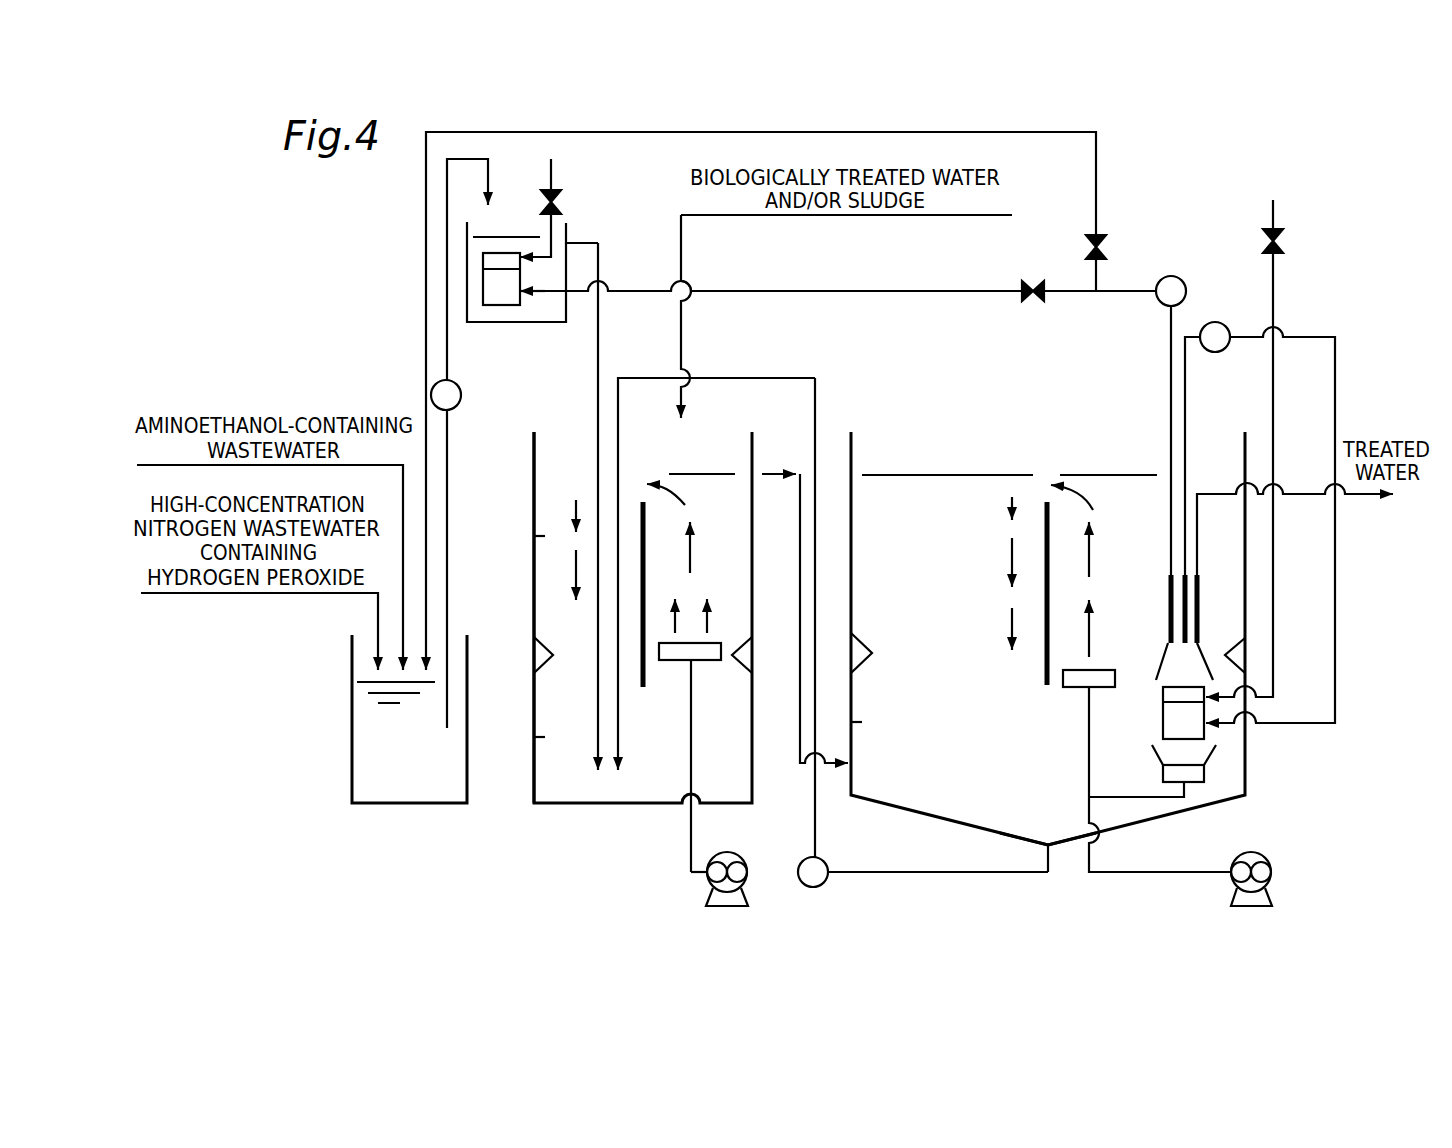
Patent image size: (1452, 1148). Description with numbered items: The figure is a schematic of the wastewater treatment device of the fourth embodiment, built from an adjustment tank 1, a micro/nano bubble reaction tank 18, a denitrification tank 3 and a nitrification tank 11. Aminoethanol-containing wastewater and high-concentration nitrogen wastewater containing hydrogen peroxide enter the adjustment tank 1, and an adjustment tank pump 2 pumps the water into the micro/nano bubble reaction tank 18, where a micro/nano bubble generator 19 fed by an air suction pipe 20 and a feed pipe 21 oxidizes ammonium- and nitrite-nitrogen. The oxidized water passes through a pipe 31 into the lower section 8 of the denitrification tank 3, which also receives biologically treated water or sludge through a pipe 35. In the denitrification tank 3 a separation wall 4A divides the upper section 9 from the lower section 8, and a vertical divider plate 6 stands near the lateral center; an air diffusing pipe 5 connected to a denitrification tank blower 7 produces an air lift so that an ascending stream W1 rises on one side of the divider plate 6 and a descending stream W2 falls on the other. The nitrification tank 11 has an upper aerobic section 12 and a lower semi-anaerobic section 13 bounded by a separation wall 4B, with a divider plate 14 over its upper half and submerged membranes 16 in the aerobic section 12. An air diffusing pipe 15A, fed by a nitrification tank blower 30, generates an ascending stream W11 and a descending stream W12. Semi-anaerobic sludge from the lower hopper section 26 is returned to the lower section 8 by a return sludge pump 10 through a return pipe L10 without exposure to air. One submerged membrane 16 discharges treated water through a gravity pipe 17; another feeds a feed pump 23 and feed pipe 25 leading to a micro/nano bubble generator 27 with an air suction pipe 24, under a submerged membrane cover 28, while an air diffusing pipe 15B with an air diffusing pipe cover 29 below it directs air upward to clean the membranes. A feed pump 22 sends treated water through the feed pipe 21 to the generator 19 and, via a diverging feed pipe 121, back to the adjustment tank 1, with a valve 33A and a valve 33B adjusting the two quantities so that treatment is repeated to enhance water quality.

The adjustment tank 1 is at (373, 805).
The adjustment tank pump 2 is at (462, 396).
The denitrification tank 3 is at (555, 805).
The separation wall 4A is at (534, 655).
The separation wall 4B is at (856, 640).
The air diffusing pipe 5 is at (712, 662).
The divider plate 6 is at (637, 562).
The denitrification tank blower 7 is at (740, 855).
The lower section 8 is at (534, 737).
The upper section 9 is at (534, 536).
The return sludge pump 10 is at (828, 882).
The return pipe L10 is at (942, 876).
The nitrification tank 11 is at (1228, 802).
The aerobic section 12 is at (907, 485).
The semi-anaerobic section 13 is at (850, 722).
The divider plate 14 is at (1045, 533).
The air diffusing pipe 15A is at (1080, 688).
The air diffusing pipe 15B is at (1206, 775).
The submerged membrane 16 is at (1198, 588).
The gravity pipe 17 is at (1307, 492).
The micro/nano bubble reaction tank 18 is at (570, 230).
The micro/nano bubble generator 19 is at (500, 252).
The air suction pipe 20 is at (556, 186).
The feed pipe 21 is at (644, 290).
The feed pump 22 is at (1184, 281).
The feed pump 23 is at (1226, 351).
The air suction pipe 24 is at (1275, 294).
The feed pipe 25 is at (1338, 397).
The lower hopper section 26 is at (1047, 836).
The micro/nano bubble generator 27 is at (1162, 710).
The submerged membrane cover 28 is at (1165, 656).
The air diffusing pipe cover 29 is at (1213, 757).
The nitrification tank blower 30 is at (1262, 853).
The pipe 31 is at (602, 353).
The valve 33A is at (1032, 301).
The valve 33B is at (1099, 236).
The pipe 35 is at (684, 350).
The feed pipe 121 is at (1098, 176).
The ascending stream W1 is at (692, 556).
The descending stream W2 is at (577, 500).
The ascending stream W11 is at (1090, 507).
The descending stream W12 is at (1010, 558).